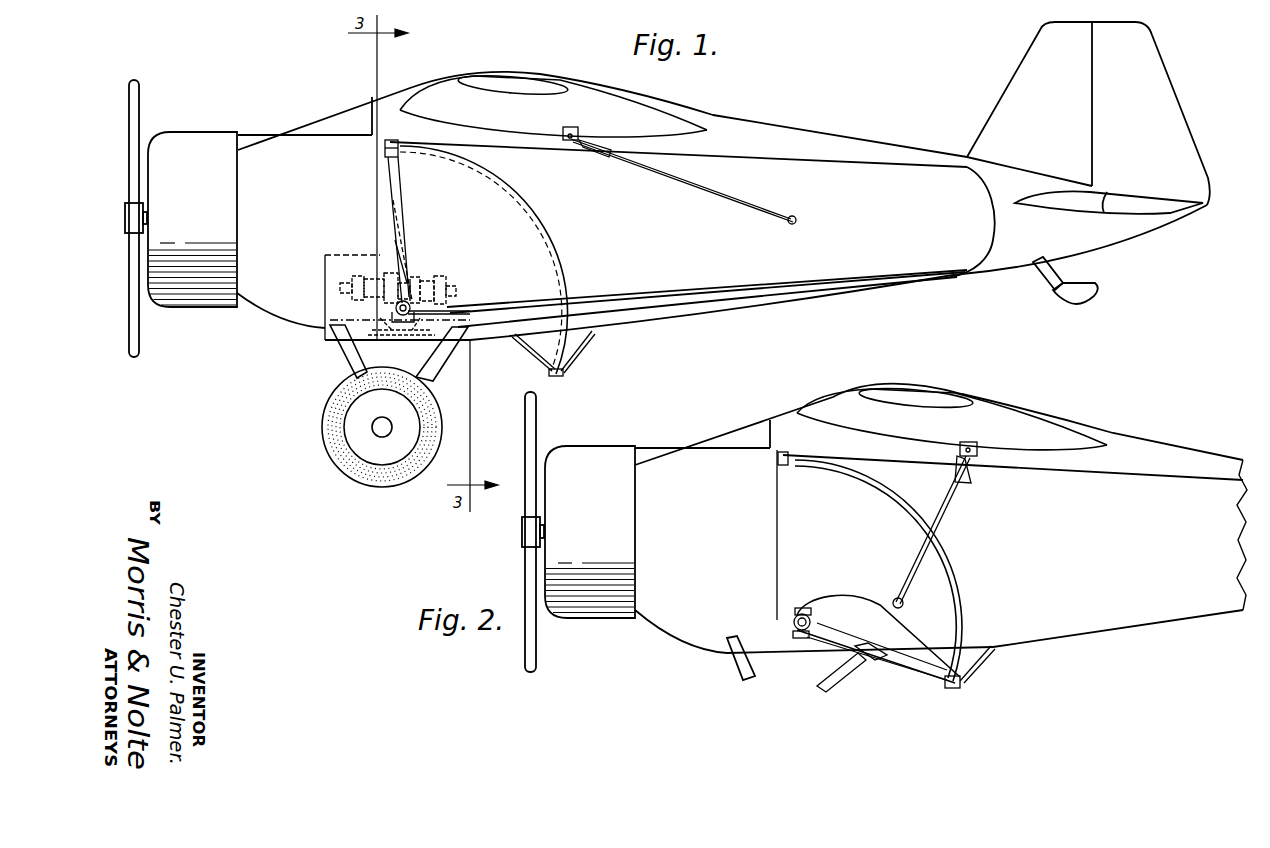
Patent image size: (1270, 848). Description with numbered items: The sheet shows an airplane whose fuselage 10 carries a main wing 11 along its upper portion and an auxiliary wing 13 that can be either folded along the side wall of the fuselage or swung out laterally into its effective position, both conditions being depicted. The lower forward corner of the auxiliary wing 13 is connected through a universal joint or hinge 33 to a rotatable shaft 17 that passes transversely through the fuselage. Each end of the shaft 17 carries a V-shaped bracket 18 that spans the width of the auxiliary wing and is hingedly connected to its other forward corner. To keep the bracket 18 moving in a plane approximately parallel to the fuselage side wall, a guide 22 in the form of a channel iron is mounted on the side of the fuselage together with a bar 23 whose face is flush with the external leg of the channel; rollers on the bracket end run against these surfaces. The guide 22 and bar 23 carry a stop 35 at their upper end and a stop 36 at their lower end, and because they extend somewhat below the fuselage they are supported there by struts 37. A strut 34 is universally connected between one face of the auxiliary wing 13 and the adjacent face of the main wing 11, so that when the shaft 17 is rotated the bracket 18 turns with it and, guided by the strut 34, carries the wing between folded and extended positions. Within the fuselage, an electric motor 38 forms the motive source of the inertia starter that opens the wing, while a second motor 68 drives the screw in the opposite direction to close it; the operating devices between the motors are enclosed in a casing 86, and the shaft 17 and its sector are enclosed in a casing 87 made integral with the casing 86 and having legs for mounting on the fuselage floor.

In FIG. 1, the fuselage 10 is at (267, 154).
In FIG. 1, the main wing 11 is at (625, 108).
In FIG. 2, the main wing 11 is at (1013, 420).
In FIG. 1, the auxiliary wing 13 is at (898, 225).
In FIG. 2, the auxiliary wing 13 is at (850, 598).
In FIG. 1, the rotatable shaft 17 is at (397, 314).
In FIG. 2, the rotatable shaft 17 is at (784, 607).
In FIG. 1, the bracket 18 is at (395, 213).
In FIG. 2, the bracket 18 is at (885, 661).
In FIG. 2, the guide 22 is at (958, 597).
In FIG. 1, the bar 23 is at (567, 256).
In FIG. 2, the bar 23 is at (966, 580).
In FIG. 1, the universal joint 33 is at (410, 302).
In FIG. 2, the universal joint 33 is at (793, 623).
In FIG. 1, the strut 34 is at (698, 186).
In FIG. 2, the strut 34 is at (950, 505).
In FIG. 1, the stop 35 is at (387, 139).
In FIG. 2, the stop 35 is at (777, 458).
In FIG. 1, the stop 36 is at (554, 377).
In FIG. 2, the stop 36 is at (953, 690).
In FIG. 1, the strut 37 is at (587, 342).
In FIG. 1, the electric motor 38 is at (349, 282).
In FIG. 1, the motor 68 is at (450, 312).
In FIG. 1, the casing 86 is at (407, 281).
In FIG. 1, the casing 87 is at (396, 313).